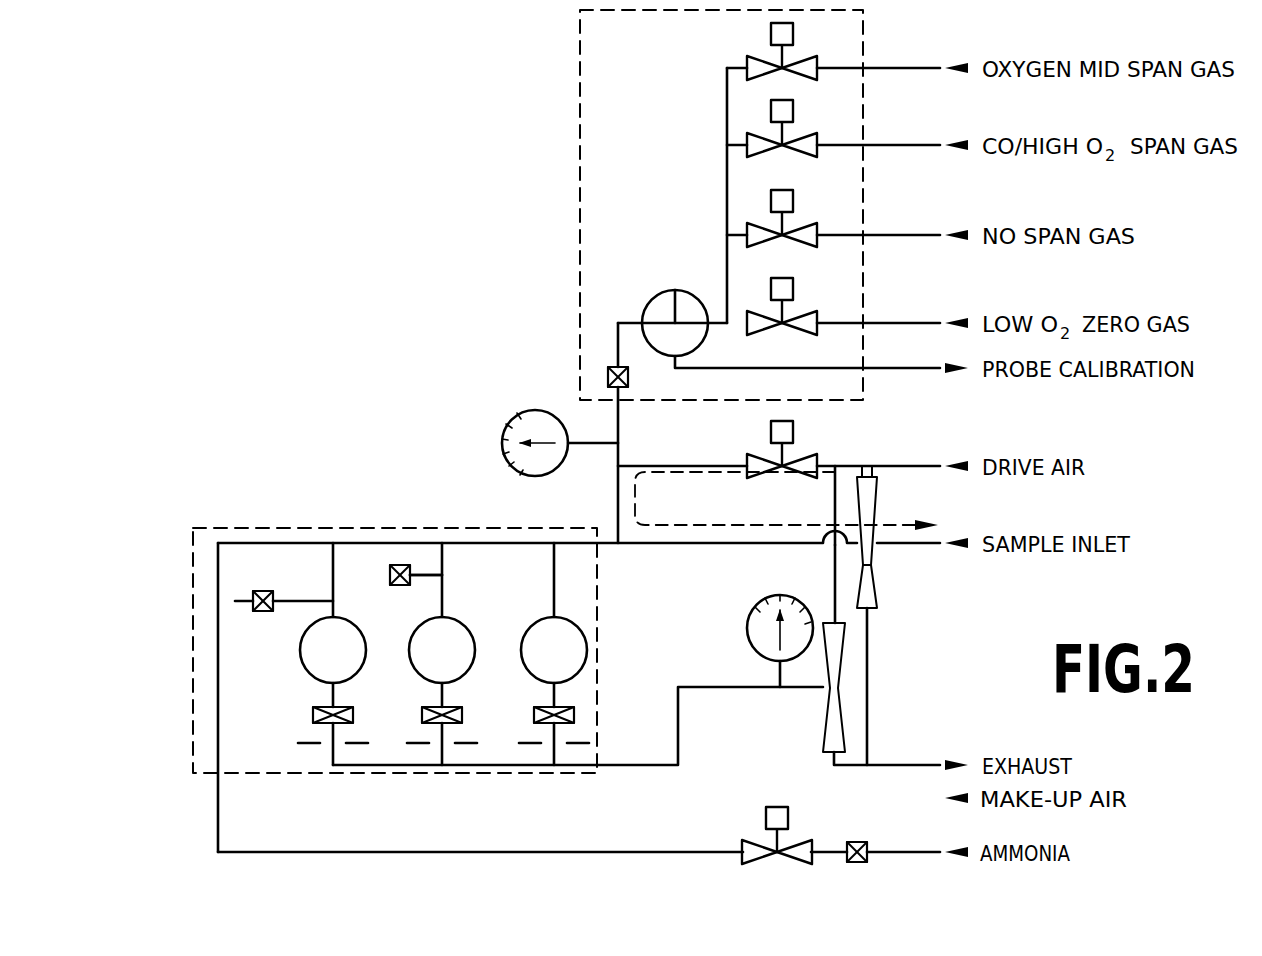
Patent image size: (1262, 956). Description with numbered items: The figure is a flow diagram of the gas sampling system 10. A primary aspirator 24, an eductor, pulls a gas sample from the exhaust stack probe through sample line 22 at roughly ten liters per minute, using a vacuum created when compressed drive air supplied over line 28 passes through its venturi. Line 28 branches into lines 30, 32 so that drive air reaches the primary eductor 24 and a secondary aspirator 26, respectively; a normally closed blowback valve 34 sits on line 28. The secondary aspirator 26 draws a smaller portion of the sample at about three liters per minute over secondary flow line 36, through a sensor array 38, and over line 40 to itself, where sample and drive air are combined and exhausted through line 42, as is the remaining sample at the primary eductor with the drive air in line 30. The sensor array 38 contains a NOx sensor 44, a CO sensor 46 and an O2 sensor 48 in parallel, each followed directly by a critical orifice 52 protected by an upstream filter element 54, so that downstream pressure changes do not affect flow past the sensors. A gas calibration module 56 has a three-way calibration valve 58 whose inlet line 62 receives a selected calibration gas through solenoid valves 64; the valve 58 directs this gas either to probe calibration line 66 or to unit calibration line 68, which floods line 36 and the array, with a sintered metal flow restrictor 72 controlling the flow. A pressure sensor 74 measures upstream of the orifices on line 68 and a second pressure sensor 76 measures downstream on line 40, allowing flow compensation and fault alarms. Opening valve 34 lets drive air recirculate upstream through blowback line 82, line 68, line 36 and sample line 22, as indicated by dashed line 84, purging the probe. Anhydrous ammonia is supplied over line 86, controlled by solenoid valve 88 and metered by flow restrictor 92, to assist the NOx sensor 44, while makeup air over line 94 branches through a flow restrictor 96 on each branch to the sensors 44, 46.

The gas sampling system 10 is at (398, 163).
The sample line 22 is at (905, 546).
The primary aspirator 24 is at (880, 508).
The secondary aspirator 26 is at (822, 710).
The drive air line 28 is at (905, 465).
The drive air branch line 30 is at (846, 470).
The drive air branch line 32 is at (835, 572).
The blowback valve 34 is at (772, 481).
The secondary flow line 36 is at (702, 548).
The sensor array 38 is at (295, 527).
The line 40 is at (676, 703).
The exhaust line 42 is at (897, 764).
The NOx sensor 44 is at (310, 672).
The CO sensor 46 is at (413, 665).
The O2 sensor 48 is at (523, 660).
The critical orifice 52 is at (320, 748).
The filter element 54 is at (355, 715).
The gas calibration module 56 is at (580, 226).
The calibration valve 58 is at (660, 290).
The inlet line 62 is at (713, 326).
The solenoid valves 64 is at (756, 51).
The probe calibration line 66 is at (825, 367).
The unit calibration line 68 is at (618, 420).
The flow restrictor 72 is at (608, 376).
The pressure sensor 74 is at (503, 436).
The second pressure sensor 76 is at (745, 622).
The blowback line 82 is at (680, 466).
The dashed line 84 is at (653, 478).
The ammonia line 86 is at (595, 853).
The solenoid valve 88 is at (760, 837).
The flow restrictor 92 is at (857, 842).
The makeup air line 94 is at (586, 800).
The flow restrictor 96 is at (265, 612).